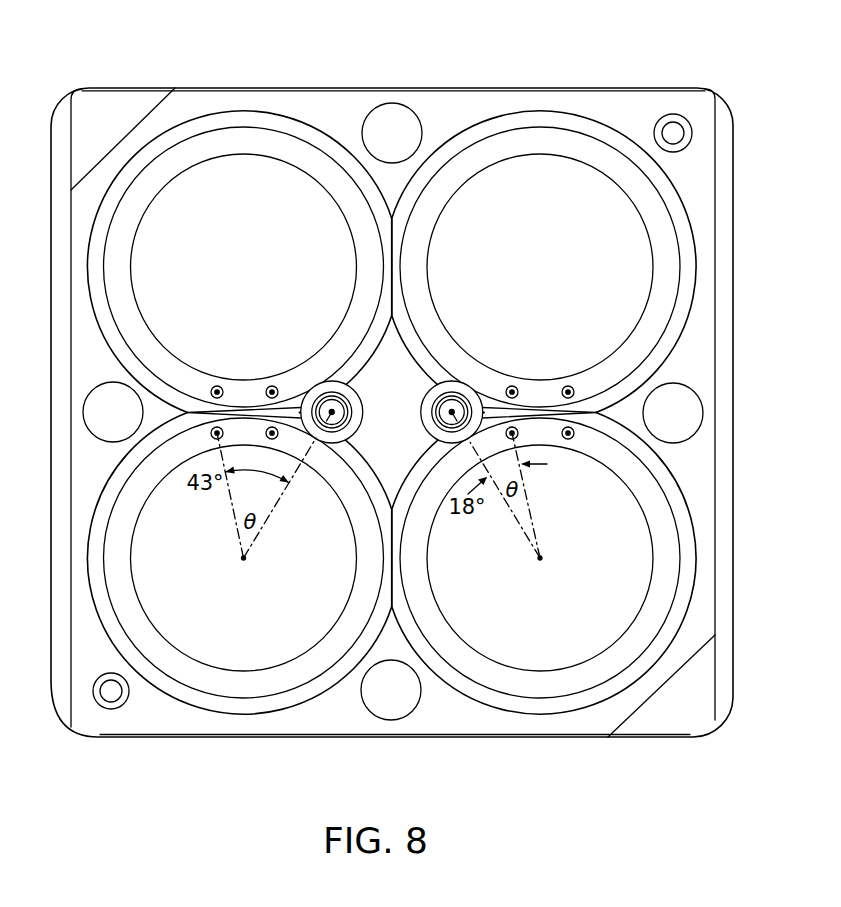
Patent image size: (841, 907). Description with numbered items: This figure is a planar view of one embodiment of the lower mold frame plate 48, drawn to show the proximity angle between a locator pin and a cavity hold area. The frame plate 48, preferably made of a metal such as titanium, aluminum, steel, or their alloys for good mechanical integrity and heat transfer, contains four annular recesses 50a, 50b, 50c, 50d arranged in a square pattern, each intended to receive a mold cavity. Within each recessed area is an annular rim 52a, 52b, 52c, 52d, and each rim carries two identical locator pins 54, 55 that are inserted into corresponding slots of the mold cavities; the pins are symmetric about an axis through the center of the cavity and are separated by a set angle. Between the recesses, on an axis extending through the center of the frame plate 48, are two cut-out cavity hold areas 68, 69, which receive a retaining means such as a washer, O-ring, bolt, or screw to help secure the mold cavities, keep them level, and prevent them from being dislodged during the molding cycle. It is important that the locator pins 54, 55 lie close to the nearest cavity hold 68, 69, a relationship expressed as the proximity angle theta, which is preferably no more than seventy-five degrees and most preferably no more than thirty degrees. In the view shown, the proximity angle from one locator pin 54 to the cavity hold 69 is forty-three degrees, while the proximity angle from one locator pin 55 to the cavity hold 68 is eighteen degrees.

The lower mold frame plate 48 is at (662, 62).
The annular recess 50a is at (553, 262).
The annular recess 50b is at (553, 565).
The annular recess 50c is at (158, 558).
The annular recess 50d is at (158, 274).
The annular rim 52a is at (622, 357).
The annular rim 52b is at (620, 648).
The annular rim 52c is at (163, 648).
The annular rim 52d is at (162, 172).
The locator pin 54 is at (217, 386).
The locator pin 55 is at (272, 386).
The cavity hold area 68 is at (446, 382).
The cavity hold area 69 is at (340, 382).